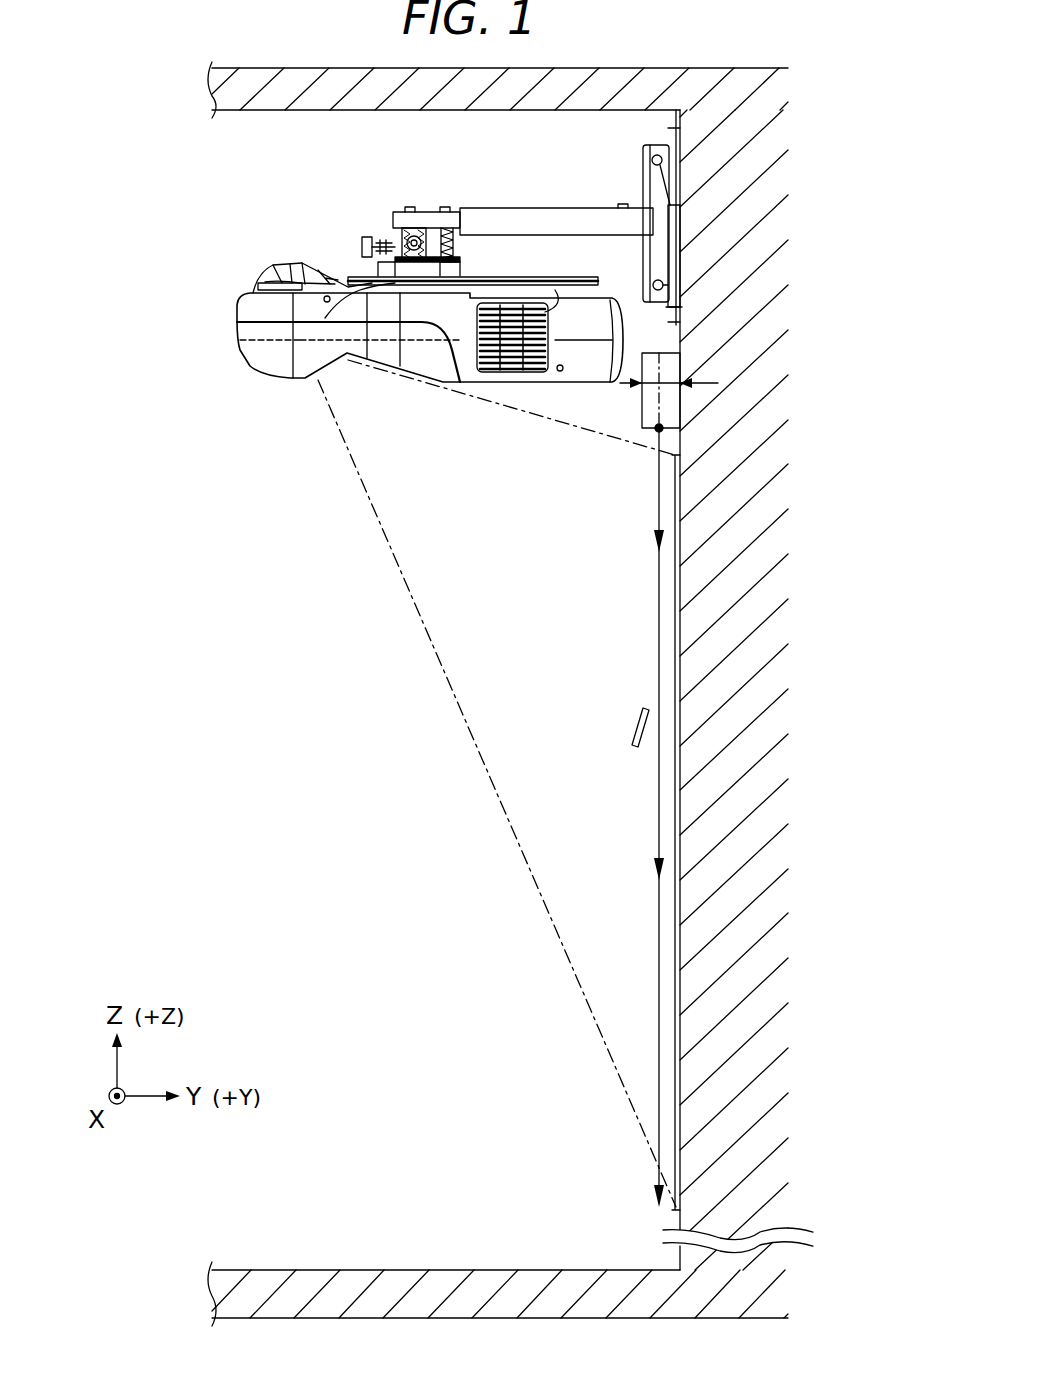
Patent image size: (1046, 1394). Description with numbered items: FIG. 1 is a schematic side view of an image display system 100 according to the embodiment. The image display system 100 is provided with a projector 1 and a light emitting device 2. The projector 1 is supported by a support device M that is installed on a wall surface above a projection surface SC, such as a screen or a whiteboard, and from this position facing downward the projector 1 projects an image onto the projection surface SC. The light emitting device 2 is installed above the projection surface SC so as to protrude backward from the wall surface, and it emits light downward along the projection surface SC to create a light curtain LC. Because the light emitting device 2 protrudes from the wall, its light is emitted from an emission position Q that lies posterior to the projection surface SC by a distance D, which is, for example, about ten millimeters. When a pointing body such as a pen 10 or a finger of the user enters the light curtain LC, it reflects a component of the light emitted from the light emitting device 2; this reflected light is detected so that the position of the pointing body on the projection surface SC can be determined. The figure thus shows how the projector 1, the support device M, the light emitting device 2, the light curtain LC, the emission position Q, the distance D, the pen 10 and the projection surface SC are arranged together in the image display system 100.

The image display system 100 is at (160, 238).
The projector 1 is at (252, 310).
The light emitting device 2 is at (642, 410).
The support device M is at (515, 210).
The distance D is at (667, 372).
The emission position Q is at (662, 422).
The light curtain LC is at (659, 583).
The pen 10 is at (633, 735).
The projection surface SC is at (672, 955).